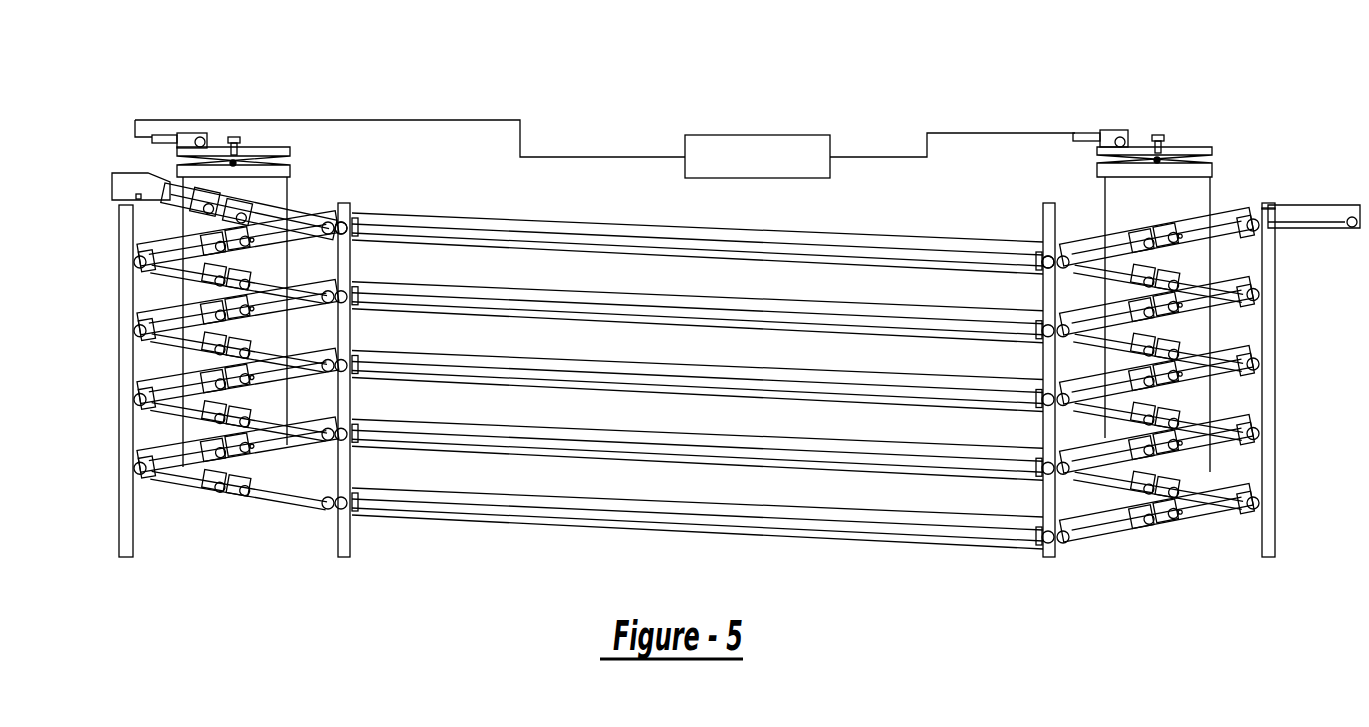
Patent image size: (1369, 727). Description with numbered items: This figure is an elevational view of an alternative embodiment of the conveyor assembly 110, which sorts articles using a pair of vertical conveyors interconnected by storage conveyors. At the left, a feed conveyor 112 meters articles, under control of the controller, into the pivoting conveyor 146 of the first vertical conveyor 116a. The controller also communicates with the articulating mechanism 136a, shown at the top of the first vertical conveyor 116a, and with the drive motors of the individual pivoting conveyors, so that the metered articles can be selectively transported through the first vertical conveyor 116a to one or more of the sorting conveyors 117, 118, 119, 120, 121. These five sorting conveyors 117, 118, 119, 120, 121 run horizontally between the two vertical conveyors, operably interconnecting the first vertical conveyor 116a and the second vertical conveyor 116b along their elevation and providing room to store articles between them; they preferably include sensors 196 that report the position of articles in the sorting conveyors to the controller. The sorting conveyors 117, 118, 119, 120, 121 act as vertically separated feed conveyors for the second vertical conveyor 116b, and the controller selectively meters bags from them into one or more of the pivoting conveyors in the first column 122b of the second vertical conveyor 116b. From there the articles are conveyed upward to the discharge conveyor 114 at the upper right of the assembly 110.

The conveyor assembly 110 is at (585, 146).
The feed conveyor 112 is at (120, 178).
The discharge conveyor 114 is at (1303, 207).
The first vertical conveyor 116a is at (290, 320).
The second vertical conveyor 116b is at (1080, 352).
The sorting conveyor 117 is at (700, 222).
The sorting conveyor 118 is at (745, 298).
The sorting conveyor 119 is at (747, 368).
The sorting conveyor 120 is at (757, 437).
The sorting conveyor 121 is at (757, 508).
The first column 122b is at (1147, 218).
The articulating mechanism 136a is at (200, 116).
The pivoting conveyor 146 is at (296, 206).
The sensor 196 is at (370, 220).